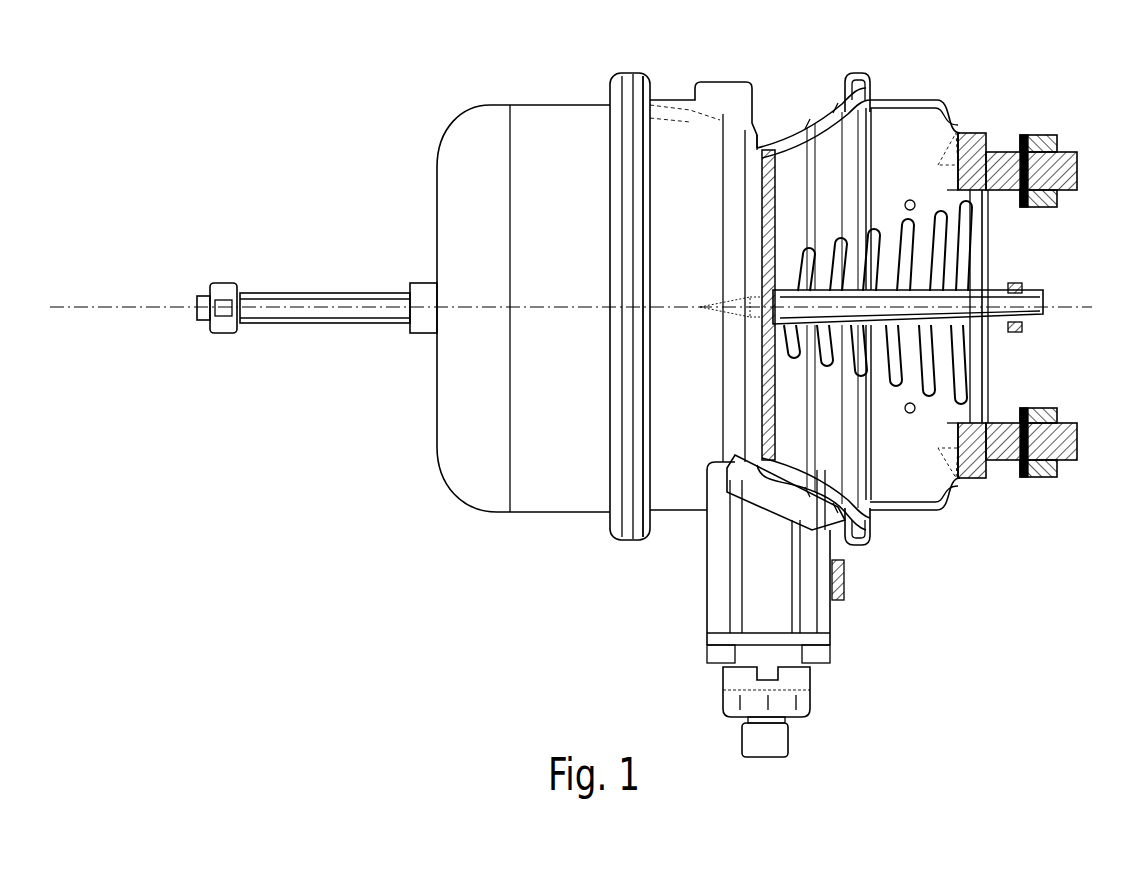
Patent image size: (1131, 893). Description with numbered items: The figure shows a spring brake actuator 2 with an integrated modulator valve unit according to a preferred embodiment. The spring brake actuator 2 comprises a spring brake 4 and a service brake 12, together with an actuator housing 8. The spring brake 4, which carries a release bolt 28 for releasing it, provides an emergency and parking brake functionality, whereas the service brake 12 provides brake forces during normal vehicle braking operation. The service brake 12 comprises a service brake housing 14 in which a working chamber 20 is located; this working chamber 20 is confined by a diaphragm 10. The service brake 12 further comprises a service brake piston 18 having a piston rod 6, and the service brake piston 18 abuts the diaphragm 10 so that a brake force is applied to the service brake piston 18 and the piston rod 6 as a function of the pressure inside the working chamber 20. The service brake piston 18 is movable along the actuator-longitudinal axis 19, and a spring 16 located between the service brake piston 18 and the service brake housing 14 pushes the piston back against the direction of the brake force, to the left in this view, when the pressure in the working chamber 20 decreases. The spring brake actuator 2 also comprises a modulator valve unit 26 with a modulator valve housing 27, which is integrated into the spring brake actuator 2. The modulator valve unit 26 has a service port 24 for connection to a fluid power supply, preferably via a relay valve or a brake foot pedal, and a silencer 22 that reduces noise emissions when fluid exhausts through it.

The spring brake actuator 2 is at (297, 90).
The spring brake 4 is at (541, 103).
The piston rod 6 is at (1015, 290).
The actuator housing 8 is at (806, 114).
The diaphragm 10 is at (822, 105).
The service brake 12 is at (918, 100).
The service brake housing 14 is at (951, 122).
The spring 16 is at (947, 207).
The service brake piston 18 is at (752, 150).
The actuator-longitudinal axis 19 is at (85, 306).
The working chamber 20 is at (863, 542).
The silencer 22 is at (775, 690).
The service port 24 is at (762, 737).
The modulator valve unit 26 is at (707, 570).
The modulator valve housing 27 is at (760, 615).
The release bolt 28 is at (340, 305).